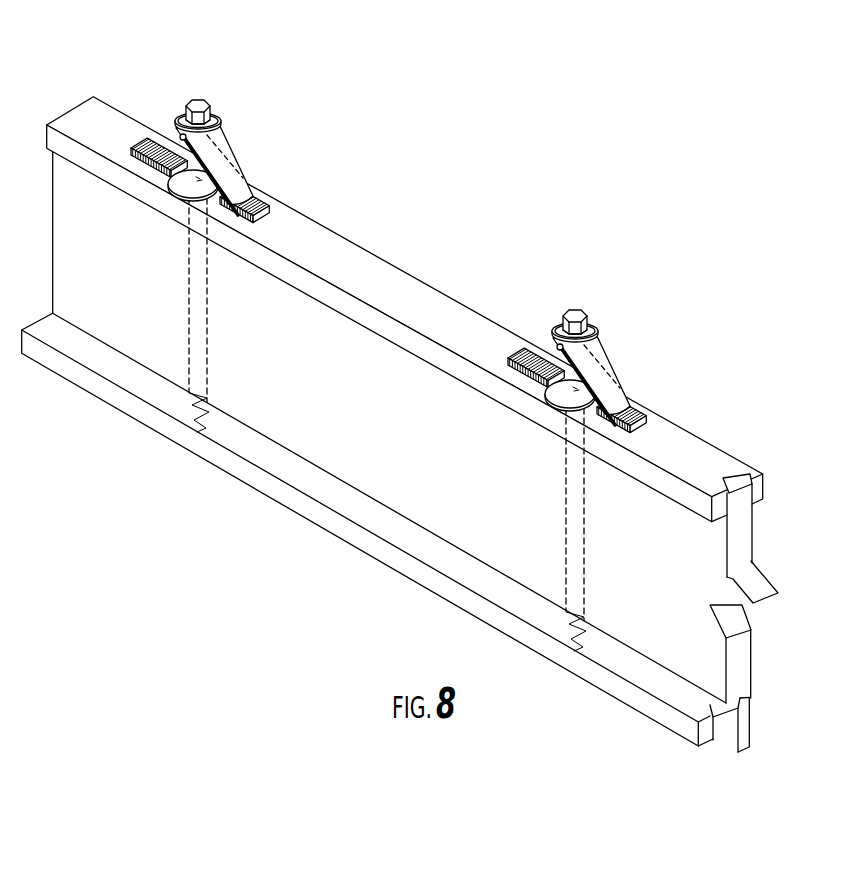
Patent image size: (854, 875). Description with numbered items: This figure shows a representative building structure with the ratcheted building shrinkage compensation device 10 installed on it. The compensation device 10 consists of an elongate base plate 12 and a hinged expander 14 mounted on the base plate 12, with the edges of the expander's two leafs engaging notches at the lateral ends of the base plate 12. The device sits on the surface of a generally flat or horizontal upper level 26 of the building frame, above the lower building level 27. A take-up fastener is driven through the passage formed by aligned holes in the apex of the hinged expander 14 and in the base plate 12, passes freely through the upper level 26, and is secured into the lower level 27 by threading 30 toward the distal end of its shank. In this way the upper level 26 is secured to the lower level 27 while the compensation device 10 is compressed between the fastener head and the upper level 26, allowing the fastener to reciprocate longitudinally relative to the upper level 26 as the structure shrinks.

The ratcheted building shrinkage compensation device 10 is at (218, 197).
The elongate base plate 12 is at (240, 224).
The hinged expander 14 is at (233, 137).
The upper level 26 is at (703, 467).
The lower building level 27 is at (615, 685).
The threading 30 is at (197, 432).